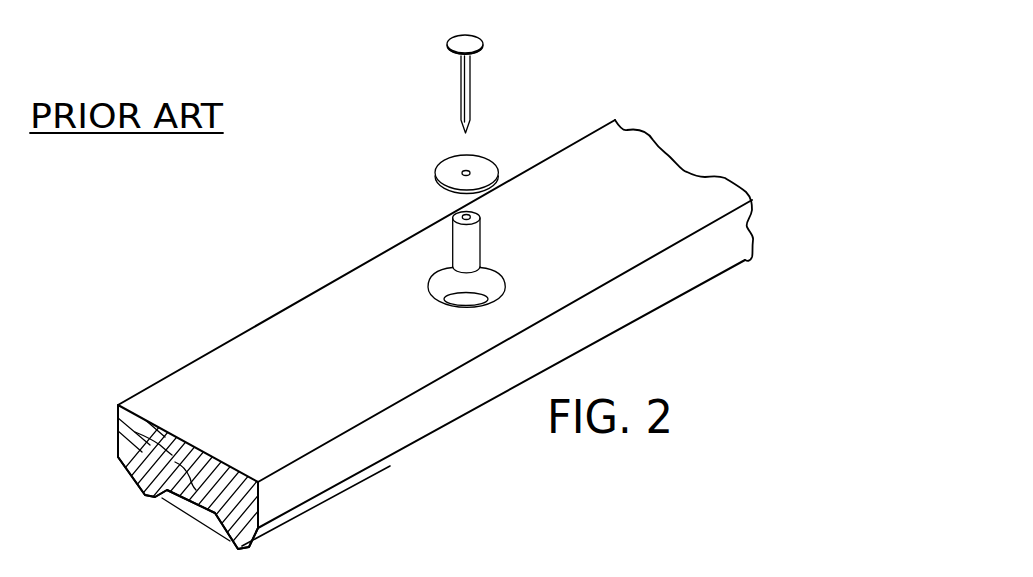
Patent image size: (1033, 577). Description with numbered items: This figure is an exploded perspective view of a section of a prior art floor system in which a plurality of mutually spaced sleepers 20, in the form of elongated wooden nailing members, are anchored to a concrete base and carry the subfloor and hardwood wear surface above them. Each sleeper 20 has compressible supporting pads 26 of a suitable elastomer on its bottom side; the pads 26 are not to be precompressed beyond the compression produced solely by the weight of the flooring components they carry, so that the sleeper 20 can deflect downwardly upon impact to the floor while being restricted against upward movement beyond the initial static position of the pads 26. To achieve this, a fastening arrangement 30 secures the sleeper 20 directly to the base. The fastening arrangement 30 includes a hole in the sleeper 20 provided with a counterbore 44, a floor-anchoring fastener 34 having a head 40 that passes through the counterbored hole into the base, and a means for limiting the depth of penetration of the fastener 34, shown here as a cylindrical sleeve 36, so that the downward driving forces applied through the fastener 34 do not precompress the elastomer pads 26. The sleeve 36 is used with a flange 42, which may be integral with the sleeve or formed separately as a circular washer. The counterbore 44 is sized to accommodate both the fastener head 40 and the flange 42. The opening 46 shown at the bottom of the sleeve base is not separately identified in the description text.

The sleeper 20 is at (672, 190).
The compressible supporting pad 26 is at (138, 493).
The fastening arrangement 30 is at (318, 186).
The floor-anchoring fastener 34 is at (461, 95).
The cylindrical sleeve 36 is at (458, 242).
The fastener head 40 is at (447, 47).
The flange 42 is at (450, 170).
The counterbore 44 is at (487, 278).
The opening in base 46 is at (462, 300).